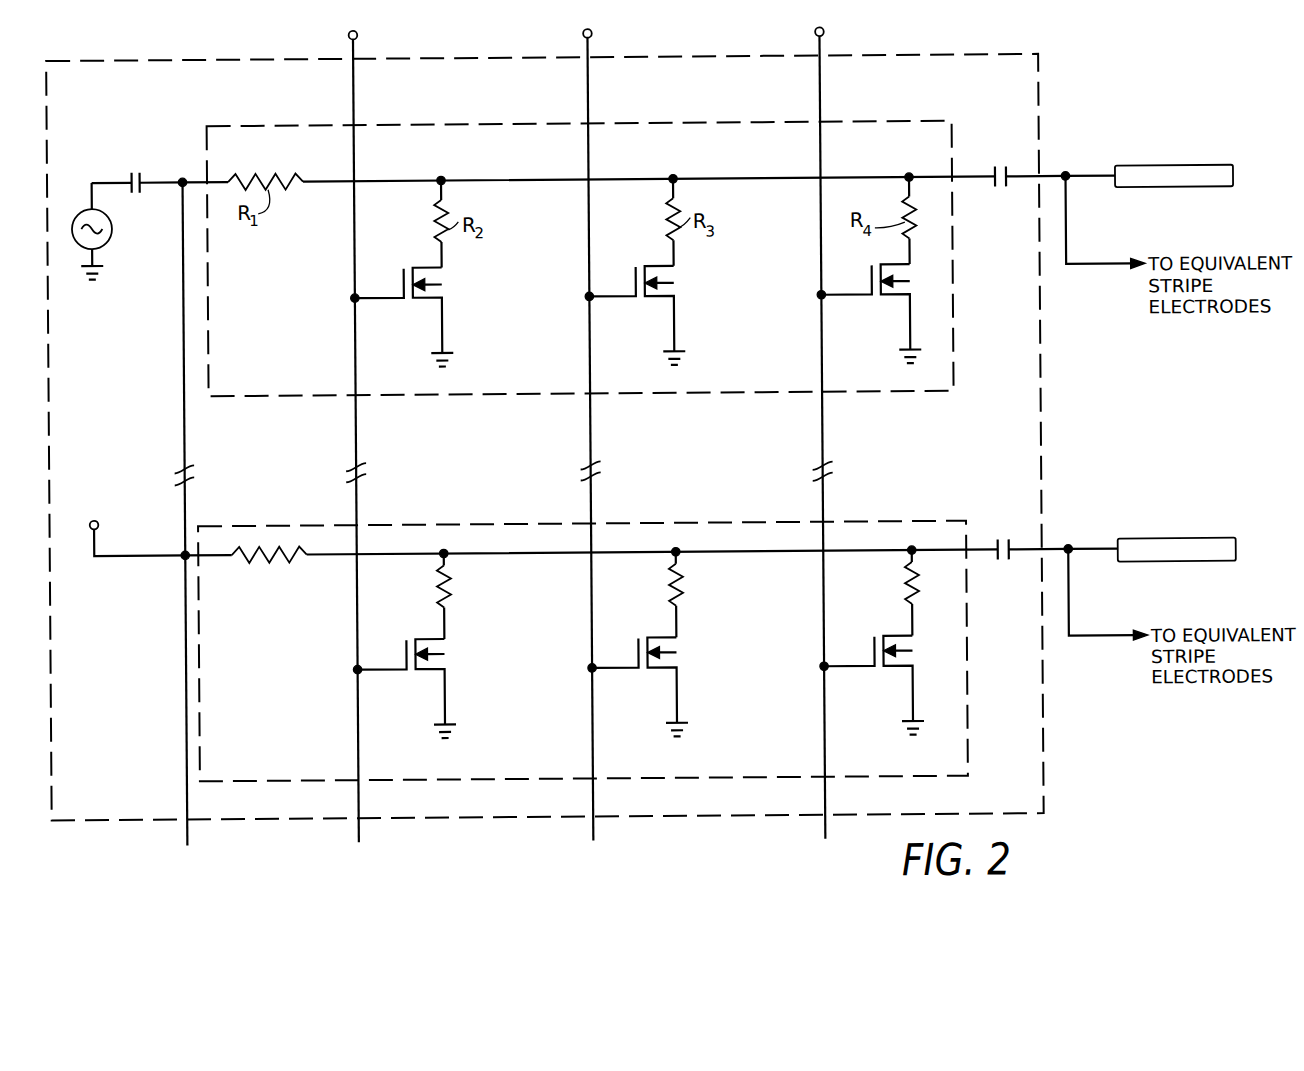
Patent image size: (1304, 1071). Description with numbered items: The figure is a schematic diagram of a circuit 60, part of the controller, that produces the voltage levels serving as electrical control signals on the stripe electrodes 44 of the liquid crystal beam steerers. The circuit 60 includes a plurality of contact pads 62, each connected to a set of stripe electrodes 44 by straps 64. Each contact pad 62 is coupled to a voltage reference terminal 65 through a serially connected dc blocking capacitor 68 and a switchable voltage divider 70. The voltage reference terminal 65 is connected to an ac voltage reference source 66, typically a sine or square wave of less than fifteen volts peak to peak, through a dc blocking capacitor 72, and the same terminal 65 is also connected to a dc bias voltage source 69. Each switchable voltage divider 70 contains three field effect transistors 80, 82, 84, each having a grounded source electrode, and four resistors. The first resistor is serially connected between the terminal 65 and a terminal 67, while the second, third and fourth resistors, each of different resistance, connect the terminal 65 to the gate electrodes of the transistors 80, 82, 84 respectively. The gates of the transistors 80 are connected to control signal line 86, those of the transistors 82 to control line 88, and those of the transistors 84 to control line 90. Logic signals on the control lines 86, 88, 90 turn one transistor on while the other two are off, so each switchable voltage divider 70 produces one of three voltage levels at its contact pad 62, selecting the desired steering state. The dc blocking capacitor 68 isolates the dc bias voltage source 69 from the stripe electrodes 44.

The stripe electrode 44 is at (1172, 160).
The circuit 60 is at (1046, 748).
The contact pad 62 is at (1069, 170).
The strap 64 is at (1089, 170).
The voltage reference terminal 65 is at (185, 173).
The ac voltage reference source 66 is at (110, 236).
The terminal 67 is at (1039, 162).
The dc blocking capacitor 68 is at (1002, 160).
The dc bias voltage source 69 is at (99, 524).
The switchable voltage divider 70 is at (260, 121).
The dc blocking capacitor 72 is at (136, 164).
The field effect transistor 80 is at (444, 274).
The field effect transistor 82 is at (672, 272).
The field effect transistor 84 is at (910, 277).
The control signal line 86 is at (357, 93).
The control signal line 88 is at (592, 93).
The control signal line 90 is at (824, 93).